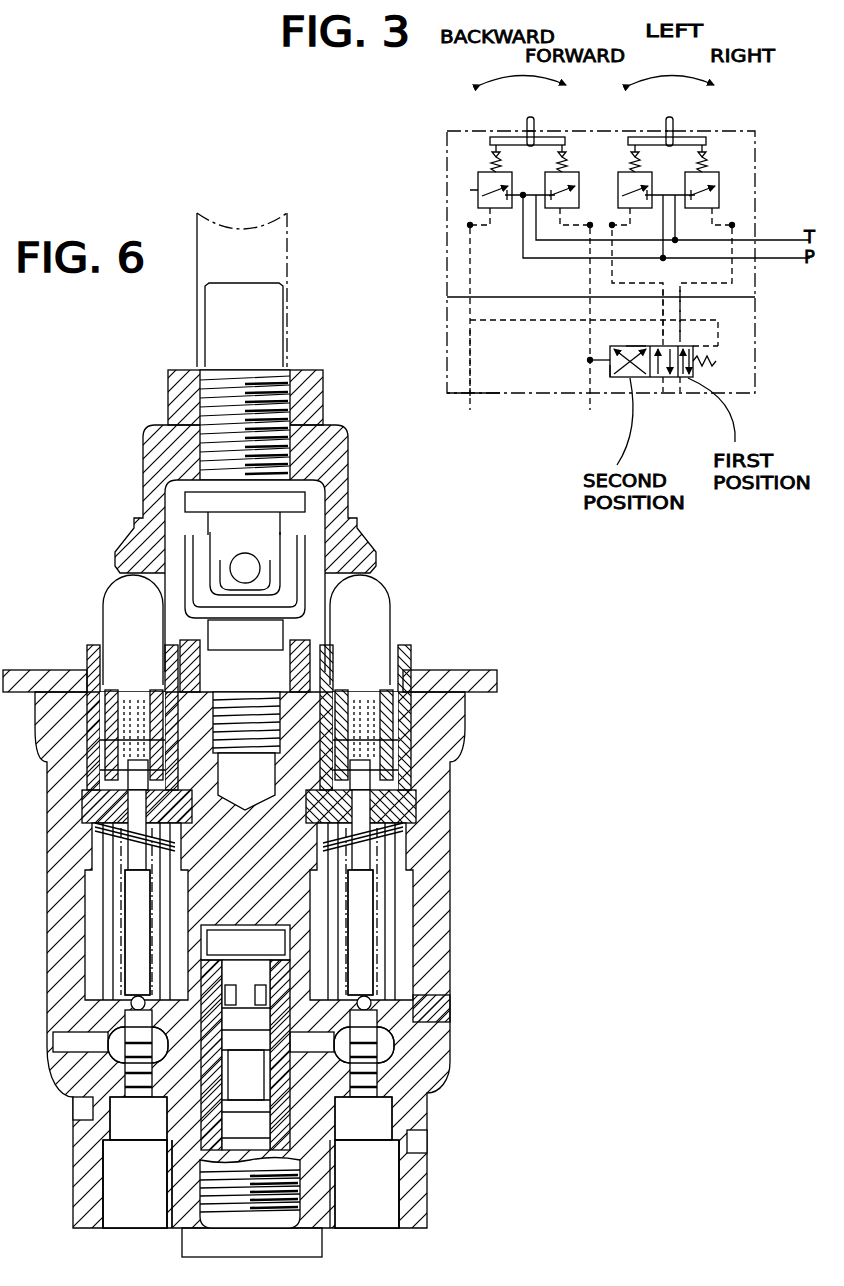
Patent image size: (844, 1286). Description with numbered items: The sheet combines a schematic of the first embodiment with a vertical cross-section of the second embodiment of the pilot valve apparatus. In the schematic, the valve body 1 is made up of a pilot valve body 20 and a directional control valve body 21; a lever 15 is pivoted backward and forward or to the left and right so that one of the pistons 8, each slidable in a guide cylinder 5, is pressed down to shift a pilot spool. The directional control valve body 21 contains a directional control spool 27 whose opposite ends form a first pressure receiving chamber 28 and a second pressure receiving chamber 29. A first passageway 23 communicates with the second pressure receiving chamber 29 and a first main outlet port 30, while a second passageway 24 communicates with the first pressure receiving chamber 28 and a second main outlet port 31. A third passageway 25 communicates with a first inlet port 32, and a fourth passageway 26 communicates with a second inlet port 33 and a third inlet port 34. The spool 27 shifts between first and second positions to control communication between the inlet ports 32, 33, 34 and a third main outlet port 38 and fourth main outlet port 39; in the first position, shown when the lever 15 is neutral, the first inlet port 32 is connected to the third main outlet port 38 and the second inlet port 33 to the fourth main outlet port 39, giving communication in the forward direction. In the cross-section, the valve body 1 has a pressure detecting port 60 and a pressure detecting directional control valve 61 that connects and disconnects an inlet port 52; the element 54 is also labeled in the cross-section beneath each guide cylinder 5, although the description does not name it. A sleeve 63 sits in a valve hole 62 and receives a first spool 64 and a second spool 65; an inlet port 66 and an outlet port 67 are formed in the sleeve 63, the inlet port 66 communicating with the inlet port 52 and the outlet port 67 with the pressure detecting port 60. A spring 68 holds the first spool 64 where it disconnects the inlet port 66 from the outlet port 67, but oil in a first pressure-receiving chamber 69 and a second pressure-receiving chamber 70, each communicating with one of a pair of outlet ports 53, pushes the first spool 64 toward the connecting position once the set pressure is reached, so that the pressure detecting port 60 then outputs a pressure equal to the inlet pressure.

In FIG. 6, the valve body 1 is at (433, 818).
In FIG. 6, the guide cylinder 5 is at (172, 844).
In FIG. 6, the piston 8 is at (113, 603).
In FIG. 3, the lever 15 is at (533, 120).
In FIG. 6, the lever 15 is at (290, 276).
In FIG. 3, the pilot valve body 20 is at (755, 190).
In FIG. 3, the directional control valve body 21 is at (755, 333).
In FIG. 3, the first hole or passageway 23 is at (590, 360).
In FIG. 3, the second hole or passageway 24 is at (470, 345).
In FIG. 3, the third hole or passageway 25 is at (663, 316).
In FIG. 3, the fourth hole or passageway 26 is at (680, 316).
In FIG. 3, the directional control spool 27 is at (636, 346).
In FIG. 3, the first pressure receiving chamber 28 is at (706, 346).
In FIG. 3, the second pressure receiving chamber 29 is at (614, 378).
In FIG. 3, the first main outlet port 30 is at (470, 395).
In FIG. 3, the second main outlet port 31 is at (578, 182).
In FIG. 3, the first inlet port 32 is at (478, 182).
In FIG. 3, the second inlet port 33 is at (618, 182).
In FIG. 3, the third inlet port 34 is at (720, 182).
In FIG. 3, the third main outlet port 38 is at (663, 378).
In FIG. 3, the fourth main outlet port 39 is at (683, 378).
In FIG. 6, the inlet port 52 is at (60, 1045).
In FIG. 6, the outlet port 53 is at (103, 1185).
In FIG. 6, the spool 54 is at (80, 960).
In FIG. 6, the pressure detecting port 60 is at (438, 1010).
In FIG. 6, the pressure detecting directional control valve 61 is at (292, 1088).
In FIG. 6, the valve hole 62 is at (167, 1138).
In FIG. 6, the sleeve 63 is at (300, 1160).
In FIG. 6, the first spool 64 is at (258, 1068).
In FIG. 6, the second spool 65 is at (300, 1127).
In FIG. 6, the inlet port 66 is at (205, 1040).
In FIG. 6, the outlet port 67 is at (300, 1012).
In FIG. 6, the spring 68 is at (215, 955).
In FIG. 6, the first pressure-receiving chamber 69 is at (205, 1118).
In FIG. 6, the second pressure-receiving chamber 70 is at (170, 1197).